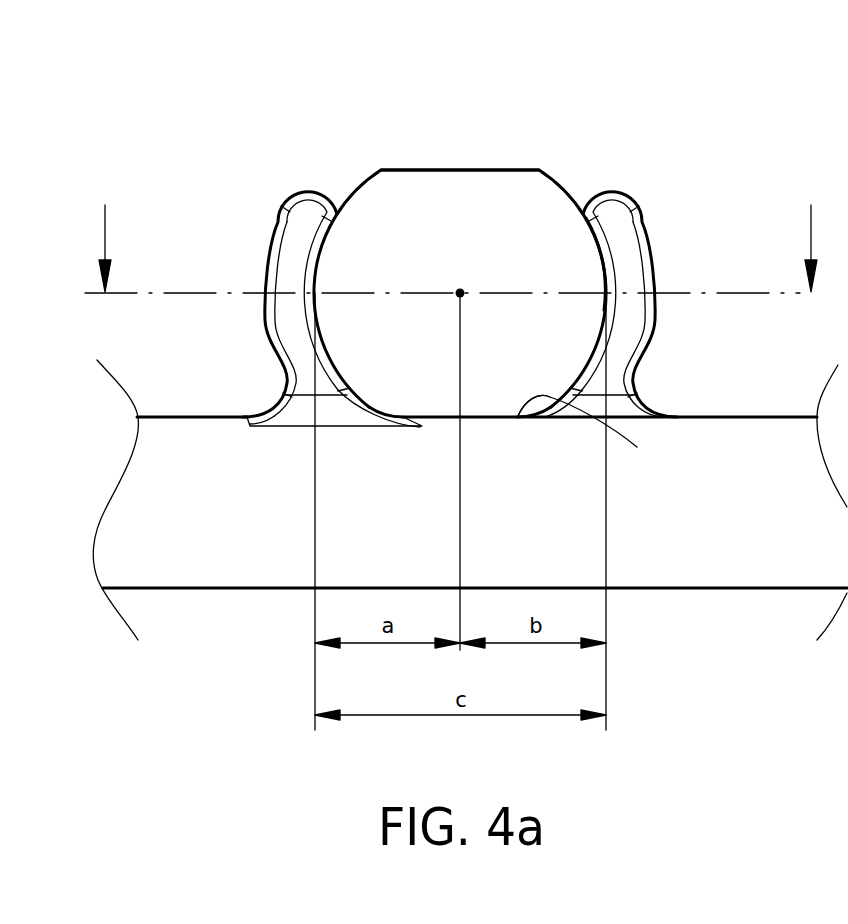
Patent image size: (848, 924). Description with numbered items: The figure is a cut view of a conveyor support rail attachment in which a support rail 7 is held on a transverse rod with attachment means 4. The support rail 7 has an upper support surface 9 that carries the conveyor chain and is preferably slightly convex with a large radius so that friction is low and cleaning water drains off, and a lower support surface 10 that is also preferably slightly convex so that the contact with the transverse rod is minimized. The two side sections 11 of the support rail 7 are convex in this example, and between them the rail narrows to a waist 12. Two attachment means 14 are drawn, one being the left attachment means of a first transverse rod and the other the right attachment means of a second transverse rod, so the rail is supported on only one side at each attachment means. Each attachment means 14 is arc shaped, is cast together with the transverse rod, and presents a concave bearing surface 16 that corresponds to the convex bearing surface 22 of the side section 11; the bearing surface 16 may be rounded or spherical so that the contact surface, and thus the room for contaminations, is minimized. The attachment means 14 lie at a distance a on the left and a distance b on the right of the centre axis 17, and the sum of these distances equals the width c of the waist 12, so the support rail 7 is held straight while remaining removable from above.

The transverse rod with attachment means 4 is at (208, 458).
The support rail 7 is at (457, 210).
The upper support surface 9 is at (513, 169).
The lower support surface 10 is at (492, 417).
The side section 11 is at (322, 172).
The waist 12 is at (560, 274).
The attachment means 14 is at (297, 268).
The bearing surface of attachment means 16 is at (600, 283).
The centre axis 17 is at (460, 293).
The convex bearing surface 22 is at (637, 447).